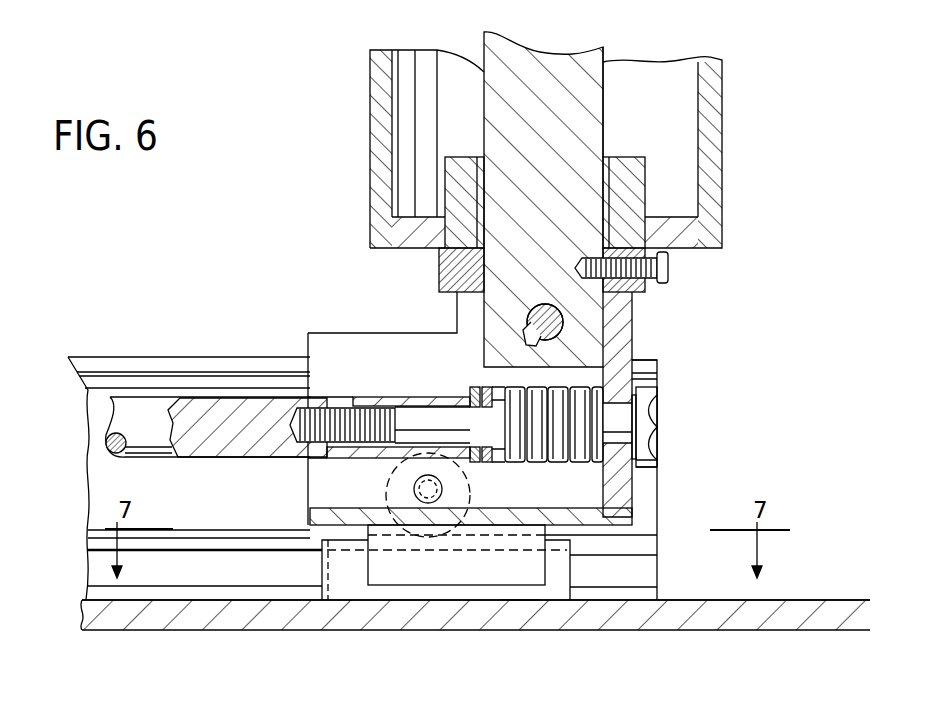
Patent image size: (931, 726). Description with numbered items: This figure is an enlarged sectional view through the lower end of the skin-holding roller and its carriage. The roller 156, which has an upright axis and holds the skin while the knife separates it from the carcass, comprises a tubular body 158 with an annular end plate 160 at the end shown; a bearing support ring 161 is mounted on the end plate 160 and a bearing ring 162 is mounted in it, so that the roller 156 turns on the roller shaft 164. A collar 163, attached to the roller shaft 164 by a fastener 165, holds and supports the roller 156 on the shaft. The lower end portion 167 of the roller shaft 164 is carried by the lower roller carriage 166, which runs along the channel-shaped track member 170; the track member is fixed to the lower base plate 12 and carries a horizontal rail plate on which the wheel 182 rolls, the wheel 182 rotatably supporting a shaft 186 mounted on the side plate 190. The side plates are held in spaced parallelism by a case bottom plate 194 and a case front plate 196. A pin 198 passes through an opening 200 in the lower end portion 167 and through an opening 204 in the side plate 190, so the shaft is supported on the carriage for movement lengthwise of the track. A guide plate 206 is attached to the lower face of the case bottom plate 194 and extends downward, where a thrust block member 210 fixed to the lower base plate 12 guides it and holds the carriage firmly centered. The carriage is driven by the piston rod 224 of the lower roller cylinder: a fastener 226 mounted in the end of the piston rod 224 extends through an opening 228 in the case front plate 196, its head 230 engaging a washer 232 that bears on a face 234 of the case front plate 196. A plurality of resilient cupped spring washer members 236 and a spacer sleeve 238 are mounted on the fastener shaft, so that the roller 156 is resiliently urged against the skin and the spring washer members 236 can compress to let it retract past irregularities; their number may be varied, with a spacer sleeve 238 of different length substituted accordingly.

The lower base plate 12 is at (305, 622).
The roller 156 is at (722, 140).
The tubular body 158 is at (378, 198).
The annular end plate 160 is at (420, 240).
The bearing support ring 161 is at (462, 168).
The bearing ring 162 is at (607, 152).
The collar 163 is at (460, 272).
The roller shaft 164 is at (540, 44).
The fastener 165 is at (670, 268).
The lower roller carriage 166 is at (637, 356).
The lower end portion 167 is at (505, 352).
The track member 170 is at (120, 486).
The wheel 182 is at (471, 486).
The shaft 186 is at (414, 486).
The side plate 190 is at (330, 342).
The case bottom plate 194 is at (325, 512).
The case front plate 196 is at (617, 343).
The pin 198 is at (536, 306).
The opening 200 is at (549, 304).
The opening 204 is at (527, 333).
The guide plate 206 is at (397, 572).
The thrust block member 210 is at (520, 600).
The piston rod 224 is at (135, 420).
The fastener 226 is at (662, 417).
The opening 228 is at (660, 410).
The head 230 is at (652, 427).
The washer 232 is at (642, 467).
The face 234 is at (634, 502).
The resilient cupped spring washer member 236 is at (550, 462).
The spacer sleeve 238 is at (396, 396).